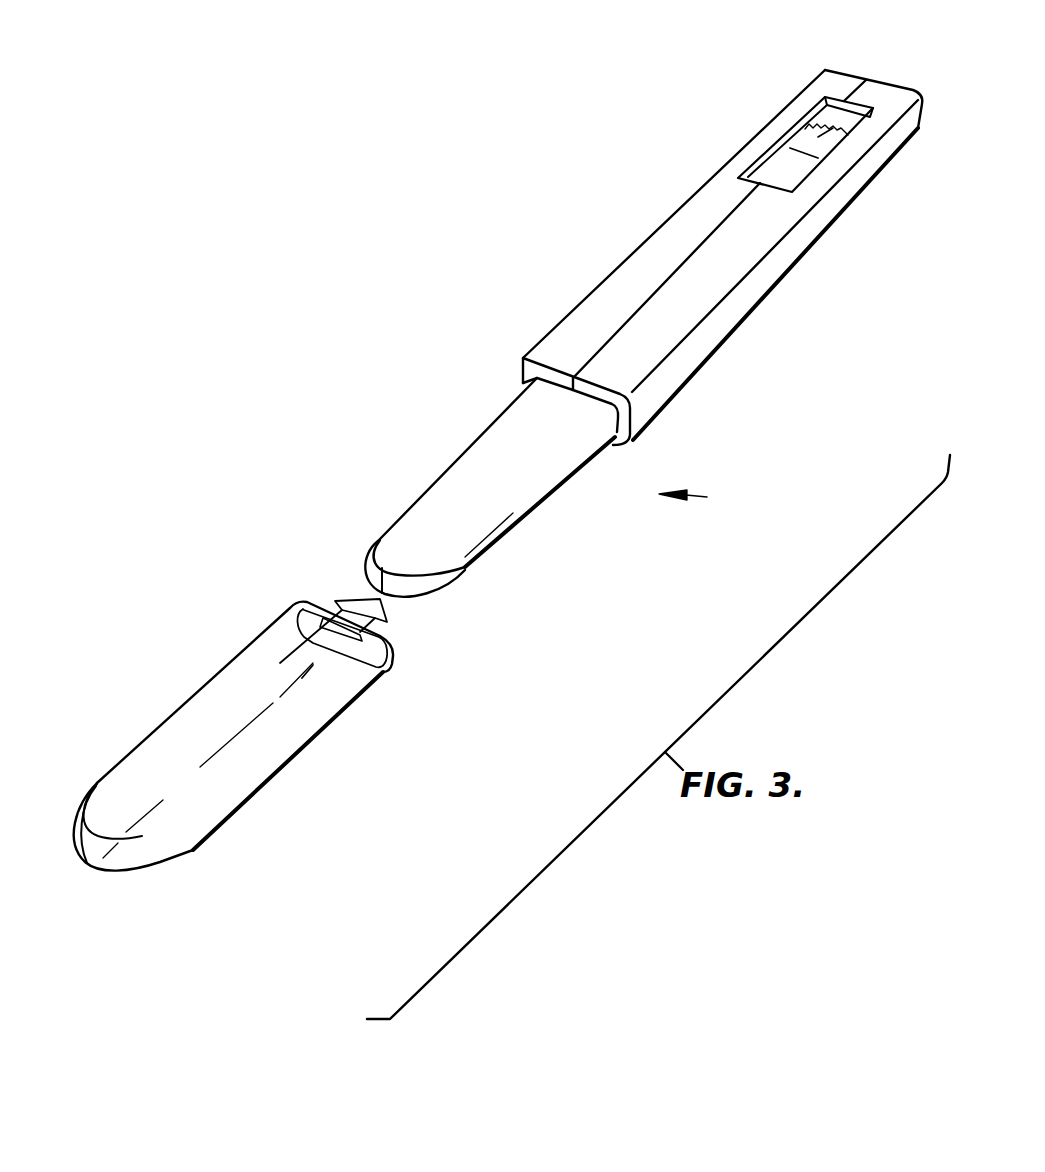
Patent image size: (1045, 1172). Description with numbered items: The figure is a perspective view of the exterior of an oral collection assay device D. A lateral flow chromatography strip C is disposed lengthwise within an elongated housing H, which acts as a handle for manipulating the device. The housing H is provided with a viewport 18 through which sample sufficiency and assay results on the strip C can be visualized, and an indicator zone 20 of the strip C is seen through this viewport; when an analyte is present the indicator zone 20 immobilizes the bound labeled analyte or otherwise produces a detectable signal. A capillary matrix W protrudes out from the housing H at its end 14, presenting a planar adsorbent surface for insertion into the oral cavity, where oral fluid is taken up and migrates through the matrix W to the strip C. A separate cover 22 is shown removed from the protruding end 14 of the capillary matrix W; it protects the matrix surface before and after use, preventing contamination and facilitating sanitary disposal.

The end of capillary matrix 14 is at (434, 559).
The viewports 18 is at (829, 121).
The indicator zone 20 is at (800, 152).
The cover 22 is at (275, 769).
The capillary matrix W is at (490, 505).
The housing H is at (722, 231).
The lateral flow chromatography strip C is at (793, 177).
The assay device D is at (695, 498).